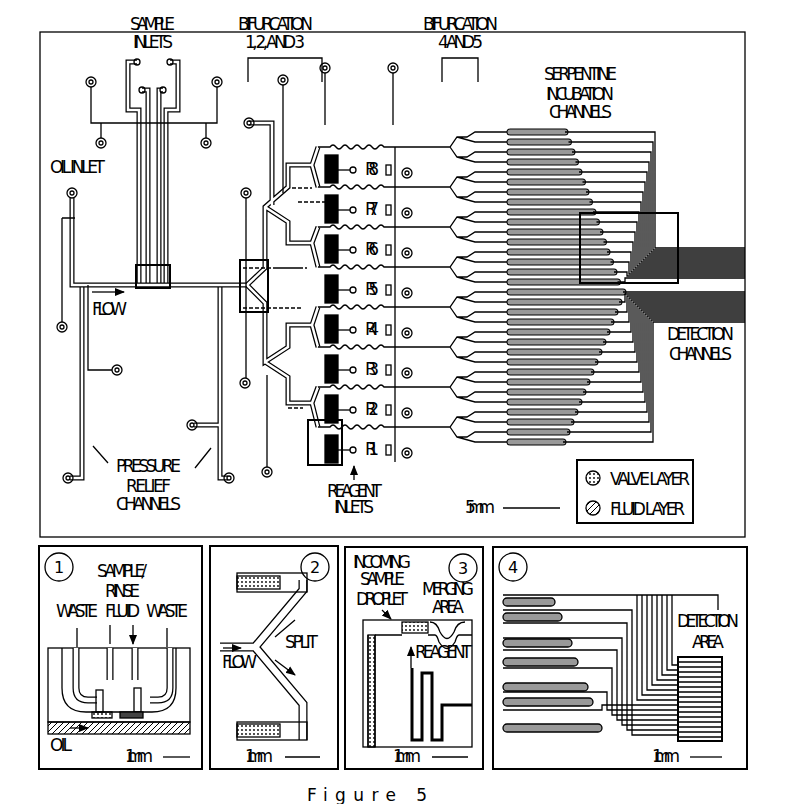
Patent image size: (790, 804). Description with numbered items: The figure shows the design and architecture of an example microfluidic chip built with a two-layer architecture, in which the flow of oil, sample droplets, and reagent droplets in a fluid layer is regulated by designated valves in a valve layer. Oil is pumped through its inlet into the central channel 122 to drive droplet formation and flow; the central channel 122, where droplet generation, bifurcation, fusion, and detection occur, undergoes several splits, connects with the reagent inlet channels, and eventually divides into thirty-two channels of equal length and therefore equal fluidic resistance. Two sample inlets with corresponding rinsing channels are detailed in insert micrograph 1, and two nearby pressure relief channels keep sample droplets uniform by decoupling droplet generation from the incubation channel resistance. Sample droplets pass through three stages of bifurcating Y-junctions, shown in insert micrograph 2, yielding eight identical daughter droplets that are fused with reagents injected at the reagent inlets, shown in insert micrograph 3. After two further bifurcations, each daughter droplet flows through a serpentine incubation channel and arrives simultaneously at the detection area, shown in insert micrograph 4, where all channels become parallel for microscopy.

The central channel 122 is at (100, 277).
The insert micrograph 1 is at (137, 271).
The insert micrograph 2 is at (238, 283).
The insert micrograph 3 is at (309, 442).
The insert micrograph 4 is at (645, 248).